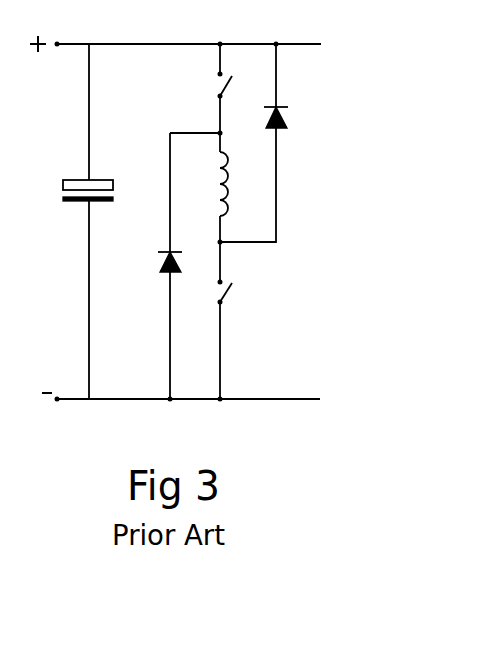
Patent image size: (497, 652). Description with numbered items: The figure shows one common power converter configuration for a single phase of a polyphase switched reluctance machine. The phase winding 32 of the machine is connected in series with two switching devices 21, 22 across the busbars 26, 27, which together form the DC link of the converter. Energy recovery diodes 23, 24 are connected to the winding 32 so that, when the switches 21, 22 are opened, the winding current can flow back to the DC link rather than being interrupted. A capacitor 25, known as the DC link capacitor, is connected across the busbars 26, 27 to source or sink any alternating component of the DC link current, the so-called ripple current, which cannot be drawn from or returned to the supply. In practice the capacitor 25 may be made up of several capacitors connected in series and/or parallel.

The switching device 21 is at (215, 86).
The switching device 22 is at (232, 292).
The energy recovery diode 23 is at (288, 115).
The energy recovery diode 24 is at (160, 257).
The capacitor 25 is at (63, 190).
The busbar 26 is at (152, 44).
The busbar 27 is at (133, 400).
The phase winding 32 is at (233, 168).